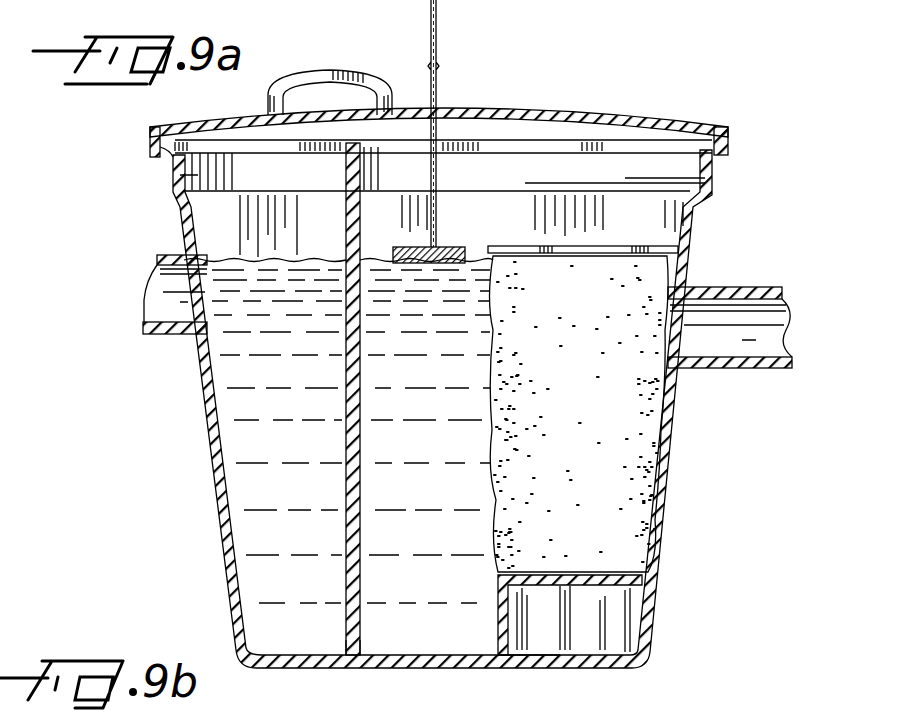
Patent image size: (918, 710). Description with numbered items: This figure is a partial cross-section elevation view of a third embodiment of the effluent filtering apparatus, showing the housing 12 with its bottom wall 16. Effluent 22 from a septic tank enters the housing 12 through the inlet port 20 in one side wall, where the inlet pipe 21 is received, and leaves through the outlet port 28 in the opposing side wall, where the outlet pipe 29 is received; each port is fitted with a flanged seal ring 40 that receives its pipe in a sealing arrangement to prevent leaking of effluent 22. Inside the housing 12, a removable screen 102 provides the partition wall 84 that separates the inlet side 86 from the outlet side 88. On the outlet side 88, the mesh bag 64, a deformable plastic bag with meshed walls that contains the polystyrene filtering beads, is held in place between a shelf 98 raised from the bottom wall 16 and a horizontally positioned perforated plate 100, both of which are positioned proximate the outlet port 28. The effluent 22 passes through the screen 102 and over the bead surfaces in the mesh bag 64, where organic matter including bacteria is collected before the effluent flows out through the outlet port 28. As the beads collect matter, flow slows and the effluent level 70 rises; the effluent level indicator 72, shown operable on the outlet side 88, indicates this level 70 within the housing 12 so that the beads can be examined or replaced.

The housing 12 is at (661, 520).
The bottom wall 16 is at (526, 660).
The inlet port 20 is at (183, 252).
The inlet pipe 21 is at (181, 309).
The effluent 22 is at (265, 432).
The outlet port 28 is at (673, 368).
The outlet pipe 29 is at (757, 287).
The flanged seal ring 40 is at (200, 336).
The mesh bag 64 is at (597, 433).
The effluent level 70 is at (245, 252).
The effluent level indicator 72 is at (441, 44).
The partition wall 84 is at (346, 628).
The inlet side 86 is at (270, 576).
The outlet side 88 is at (408, 623).
The shelf 98 is at (606, 592).
The perforated plate 100 is at (534, 247).
The removable screen 102 is at (362, 440).